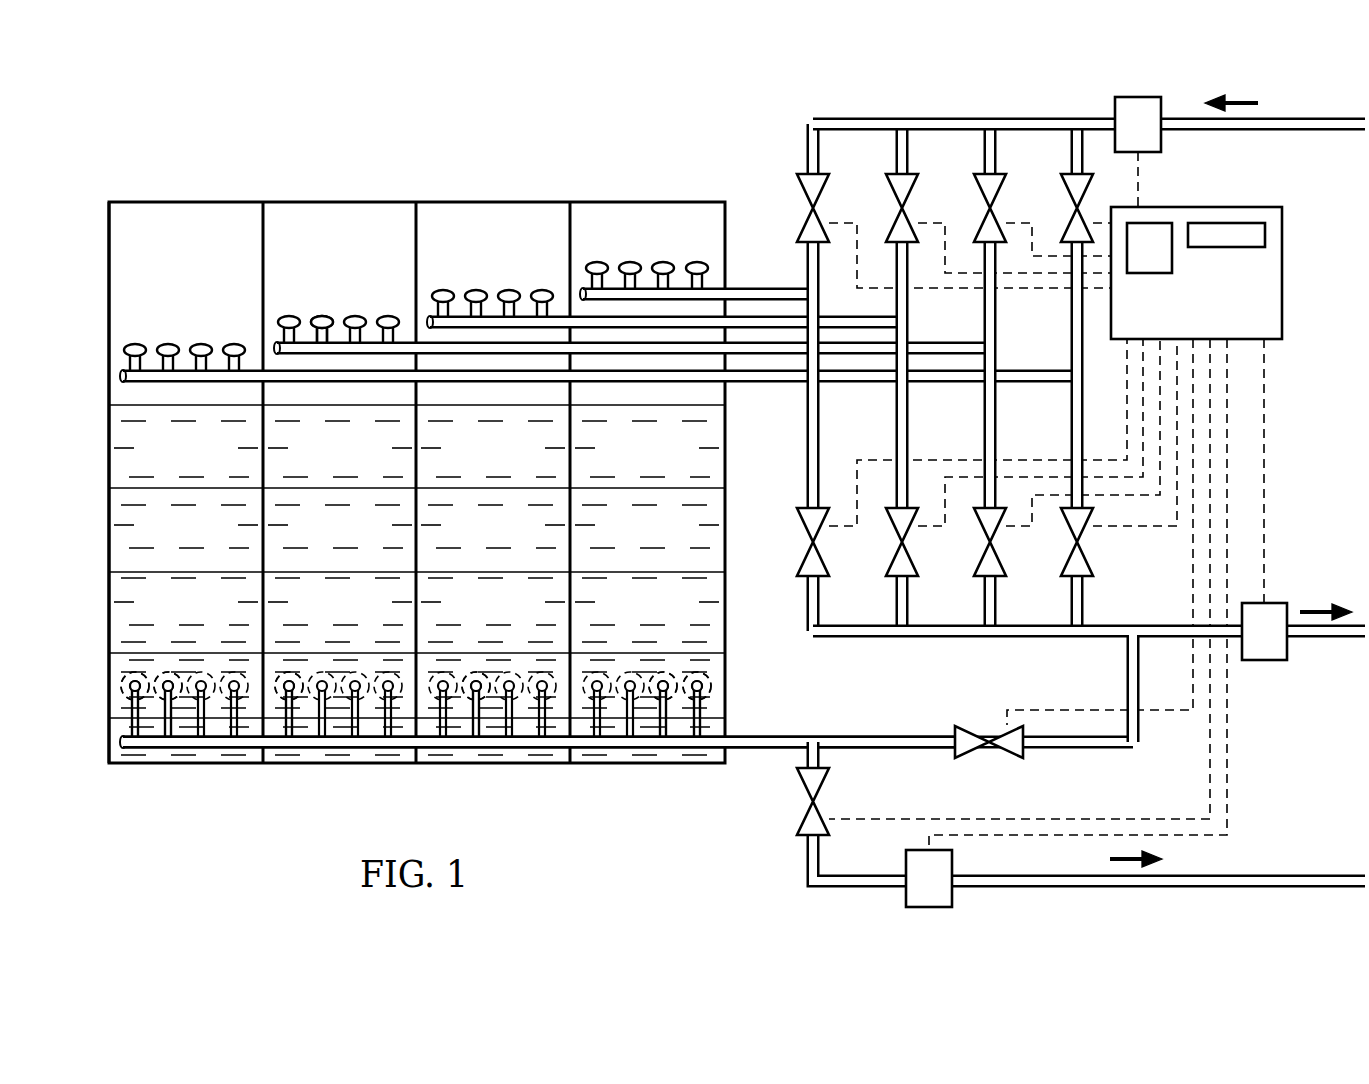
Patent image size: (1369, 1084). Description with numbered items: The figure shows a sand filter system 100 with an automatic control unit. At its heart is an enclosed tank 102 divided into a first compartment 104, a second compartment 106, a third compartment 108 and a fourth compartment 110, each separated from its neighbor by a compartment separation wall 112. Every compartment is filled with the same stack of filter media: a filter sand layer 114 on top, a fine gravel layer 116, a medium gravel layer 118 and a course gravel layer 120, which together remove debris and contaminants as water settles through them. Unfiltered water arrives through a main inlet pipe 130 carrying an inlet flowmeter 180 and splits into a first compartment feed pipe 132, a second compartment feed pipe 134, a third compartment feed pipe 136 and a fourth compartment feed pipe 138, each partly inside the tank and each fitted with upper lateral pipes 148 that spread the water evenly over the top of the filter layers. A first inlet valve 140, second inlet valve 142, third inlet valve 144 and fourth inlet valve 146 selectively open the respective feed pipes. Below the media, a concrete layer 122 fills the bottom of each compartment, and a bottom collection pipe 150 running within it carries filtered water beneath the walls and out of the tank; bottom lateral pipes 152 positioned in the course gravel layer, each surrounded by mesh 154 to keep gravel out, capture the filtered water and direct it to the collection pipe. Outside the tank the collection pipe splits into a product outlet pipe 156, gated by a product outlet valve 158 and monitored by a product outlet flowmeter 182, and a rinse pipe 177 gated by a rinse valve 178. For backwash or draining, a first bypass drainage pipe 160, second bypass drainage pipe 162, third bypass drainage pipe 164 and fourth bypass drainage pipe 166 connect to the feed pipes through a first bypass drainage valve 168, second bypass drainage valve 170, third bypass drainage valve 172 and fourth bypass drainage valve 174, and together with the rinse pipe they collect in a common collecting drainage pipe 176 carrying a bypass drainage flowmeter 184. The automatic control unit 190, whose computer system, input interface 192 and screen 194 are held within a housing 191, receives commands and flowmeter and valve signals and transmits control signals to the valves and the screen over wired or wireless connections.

The system 100 is at (240, 98).
The tank 102 is at (385, 198).
The first compartment 104 is at (168, 210).
The second compartment 106 is at (310, 210).
The third compartment 108 is at (490, 210).
The fourth compartment 110 is at (612, 210).
The compartment separation wall 112 is at (258, 245).
The filter sand layer 114 is at (206, 463).
The fine gravel layer 116 is at (206, 540).
The medium gravel layer 118 is at (206, 617).
The course gravel layer 120 is at (118, 703).
The concrete layer 122 is at (180, 738).
The main inlet pipe 130 is at (1292, 117).
The first compartment feed pipe 132 is at (182, 358).
The second compartment feed pipe 134 is at (372, 328).
The third compartment feed pipe 136 is at (460, 300).
The fourth compartment feed pipe 138 is at (647, 276).
The first inlet valve 140 is at (1062, 195).
The second inlet valve 142 is at (974, 195).
The third inlet valve 144 is at (886, 195).
The fourth inlet valve 146 is at (797, 195).
The upper lateral pipes 148 is at (320, 325).
The bottom collection pipe 150 is at (245, 749).
The bottom lateral pipes 152 is at (703, 688).
The mesh 154 is at (128, 674).
The product outlet pipe 156 is at (1153, 888).
The product outlet valve 158 is at (797, 787).
The first bypass drainage pipe 160 is at (1071, 398).
The second bypass drainage pipe 162 is at (984, 398).
The third bypass drainage pipe 164 is at (896, 398).
The fourth bypass drainage pipe 166 is at (806, 398).
The first bypass drainage valve 168 is at (1062, 530).
The second bypass drainage valve 170 is at (974, 530).
The third bypass drainage valve 172 is at (886, 530).
The fourth bypass drainage valve 174 is at (797, 530).
The collecting drainage pipe 176 is at (1318, 638).
The rinse pipe 177 is at (890, 750).
The rinse valve 178 is at (978, 758).
The inlet flowmeter 180 is at (1148, 97).
The product outlet flowmeter 182 is at (940, 908).
The bypass drainage flowmeter 184 is at (1272, 661).
The automatic control unit 190 is at (1250, 197).
The housing 191 is at (1196, 207).
The input interface 192 is at (1150, 273).
The screen 194 is at (1218, 247).